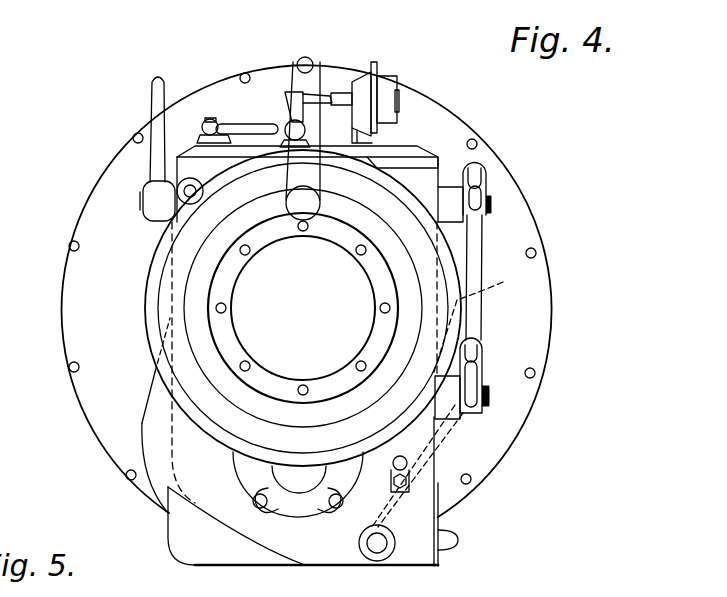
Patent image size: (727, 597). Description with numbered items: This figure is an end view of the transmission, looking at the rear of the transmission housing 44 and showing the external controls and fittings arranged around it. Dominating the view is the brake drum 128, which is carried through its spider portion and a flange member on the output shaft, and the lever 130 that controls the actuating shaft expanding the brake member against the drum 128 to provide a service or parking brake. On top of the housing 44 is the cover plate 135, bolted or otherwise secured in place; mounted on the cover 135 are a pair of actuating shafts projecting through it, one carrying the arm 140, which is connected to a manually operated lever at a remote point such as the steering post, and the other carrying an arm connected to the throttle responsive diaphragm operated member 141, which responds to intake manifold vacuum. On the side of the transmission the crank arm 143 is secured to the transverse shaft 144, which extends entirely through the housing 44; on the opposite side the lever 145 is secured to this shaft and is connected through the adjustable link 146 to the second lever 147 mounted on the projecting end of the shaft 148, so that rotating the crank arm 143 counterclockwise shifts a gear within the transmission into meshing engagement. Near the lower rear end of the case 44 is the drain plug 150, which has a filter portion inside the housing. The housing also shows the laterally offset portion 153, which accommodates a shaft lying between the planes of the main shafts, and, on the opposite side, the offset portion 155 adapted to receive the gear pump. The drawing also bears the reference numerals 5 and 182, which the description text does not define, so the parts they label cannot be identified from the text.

The mounting flange 5 is at (100, 177).
The transmission housing 44 is at (165, 514).
The brake drum 128 is at (152, 272).
The lever 130 is at (322, 82).
The cover plate 135 is at (399, 154).
The arm 140 is at (247, 111).
The diaphragm operated member 141 is at (384, 88).
The crank arm 143 is at (152, 103).
The transverse shaft 144 is at (492, 202).
The lever 145 is at (477, 167).
The adjustable link 146 is at (477, 255).
The second lever 147 is at (470, 392).
The shaft 148 is at (488, 398).
The drain plug 150 is at (377, 553).
The laterally offset portion 153 is at (140, 423).
The offset portion 155 is at (480, 292).
The lower housing boss 182 is at (292, 516).